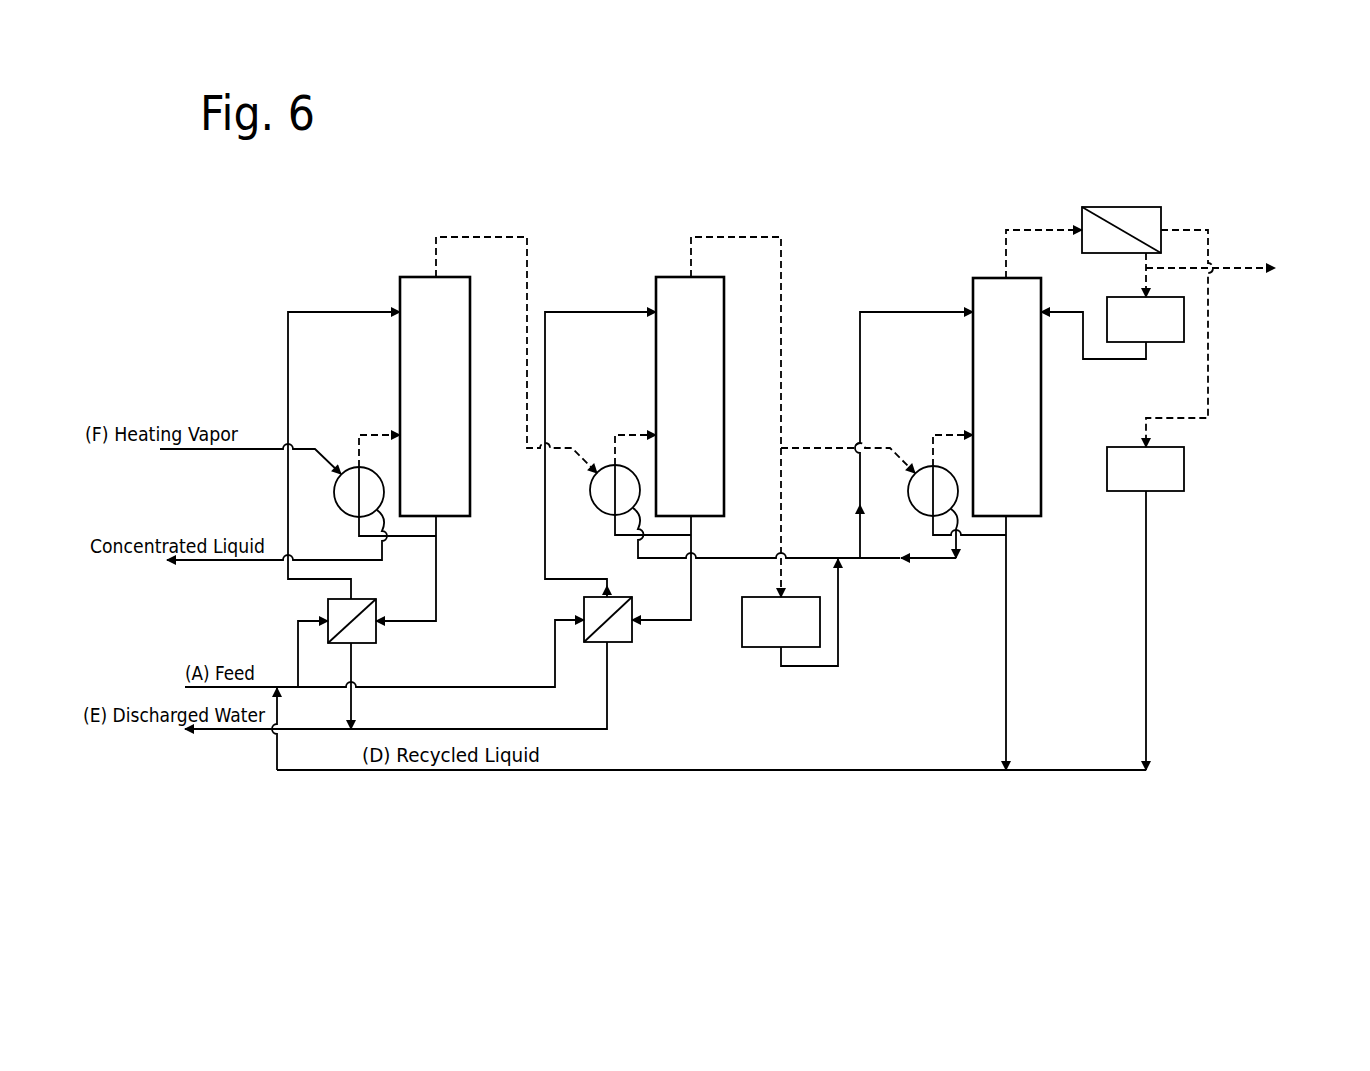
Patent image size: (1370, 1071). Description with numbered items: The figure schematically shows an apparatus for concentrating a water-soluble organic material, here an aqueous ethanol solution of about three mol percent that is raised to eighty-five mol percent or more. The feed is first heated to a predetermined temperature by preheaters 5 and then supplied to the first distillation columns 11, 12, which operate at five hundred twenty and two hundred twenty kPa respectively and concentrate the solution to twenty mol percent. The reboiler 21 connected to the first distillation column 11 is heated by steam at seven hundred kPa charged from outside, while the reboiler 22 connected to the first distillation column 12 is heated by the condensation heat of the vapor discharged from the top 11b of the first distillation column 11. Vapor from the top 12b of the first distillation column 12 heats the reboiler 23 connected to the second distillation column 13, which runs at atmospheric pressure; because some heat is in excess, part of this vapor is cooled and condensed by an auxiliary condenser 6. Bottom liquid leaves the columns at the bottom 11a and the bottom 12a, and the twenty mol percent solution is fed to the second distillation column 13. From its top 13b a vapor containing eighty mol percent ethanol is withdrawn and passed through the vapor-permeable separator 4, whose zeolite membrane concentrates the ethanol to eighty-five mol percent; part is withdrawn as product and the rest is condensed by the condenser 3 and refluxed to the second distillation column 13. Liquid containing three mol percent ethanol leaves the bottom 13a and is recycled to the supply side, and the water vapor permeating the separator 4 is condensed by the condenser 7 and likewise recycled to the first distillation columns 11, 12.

The first distillation column 11 is at (400, 388).
The bottom of the first distillation column 11a is at (452, 516).
The top of the first distillation column 11b is at (450, 277).
The first distillation column 12 is at (656, 377).
The bottom of the first distillation column 12a is at (704, 516).
The top of the first distillation column 12b is at (700, 277).
The second distillation column 13 is at (973, 378).
The bottom of the second distillation column 13a is at (1030, 516).
The top of the second distillation column 13b is at (990, 278).
The reboiler 21 is at (341, 510).
The reboiler 22 is at (598, 507).
The reboiler 23 is at (916, 508).
The preheater 5 is at (328, 606).
The auxiliary condenser 6 is at (750, 647).
The vapor-permeable separator 4 is at (1161, 220).
The condenser 3 is at (1120, 297).
The condenser 7 is at (1184, 466).